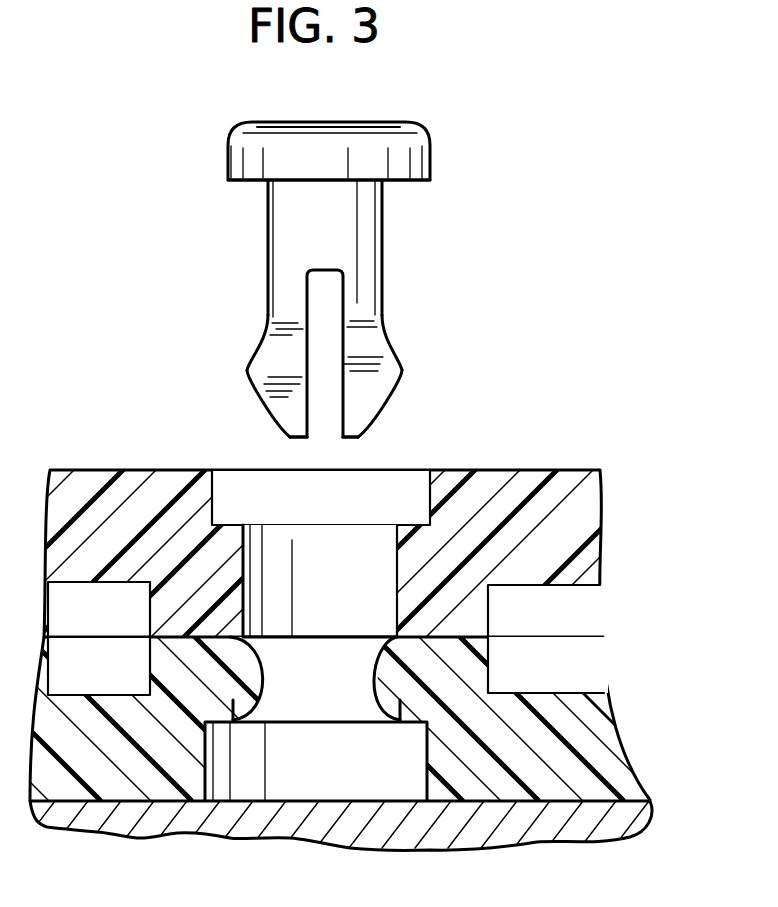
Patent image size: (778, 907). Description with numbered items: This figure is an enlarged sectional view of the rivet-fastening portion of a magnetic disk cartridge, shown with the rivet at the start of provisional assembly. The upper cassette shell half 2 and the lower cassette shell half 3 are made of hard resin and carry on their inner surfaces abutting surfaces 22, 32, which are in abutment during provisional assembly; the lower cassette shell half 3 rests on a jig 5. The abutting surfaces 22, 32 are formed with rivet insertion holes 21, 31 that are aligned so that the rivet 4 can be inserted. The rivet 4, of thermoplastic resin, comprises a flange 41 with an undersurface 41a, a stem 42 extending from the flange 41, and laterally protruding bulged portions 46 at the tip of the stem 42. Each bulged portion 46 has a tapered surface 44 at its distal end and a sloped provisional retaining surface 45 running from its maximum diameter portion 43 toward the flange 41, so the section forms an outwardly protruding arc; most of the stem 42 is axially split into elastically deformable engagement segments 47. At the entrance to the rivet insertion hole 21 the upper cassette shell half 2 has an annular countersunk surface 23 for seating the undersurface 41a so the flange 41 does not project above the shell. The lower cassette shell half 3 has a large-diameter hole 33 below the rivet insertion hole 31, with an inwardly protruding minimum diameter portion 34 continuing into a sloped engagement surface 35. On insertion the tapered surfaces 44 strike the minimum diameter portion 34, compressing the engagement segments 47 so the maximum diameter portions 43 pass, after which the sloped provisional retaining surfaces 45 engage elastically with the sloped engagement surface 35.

The upper cassette shell half 2 is at (343, 562).
The lower cassette shell half 3 is at (345, 684).
The rivet 4 is at (314, 291).
The jig 5 is at (643, 800).
The rivet insertion hole 21 is at (372, 538).
The abutting surface 22 is at (173, 660).
The annular countersunk surface 23 is at (232, 525).
The rivet insertion hole 31 is at (355, 640).
The abutting surface 32 is at (170, 628).
The large-diameter hole 33 is at (427, 745).
The minimum diameter portion 34 is at (373, 667).
The sloped engagement surface 35 is at (380, 702).
The flange 41 is at (335, 173).
The undersurface 41a is at (250, 183).
The stem 42 is at (281, 257).
The maximum diameter portion 43 is at (248, 367).
The tapered surface 44 is at (323, 431).
The sloped provisional retaining surface 45 is at (258, 342).
The bulged portion 46 is at (219, 393).
The engagement segment 47 is at (314, 369).